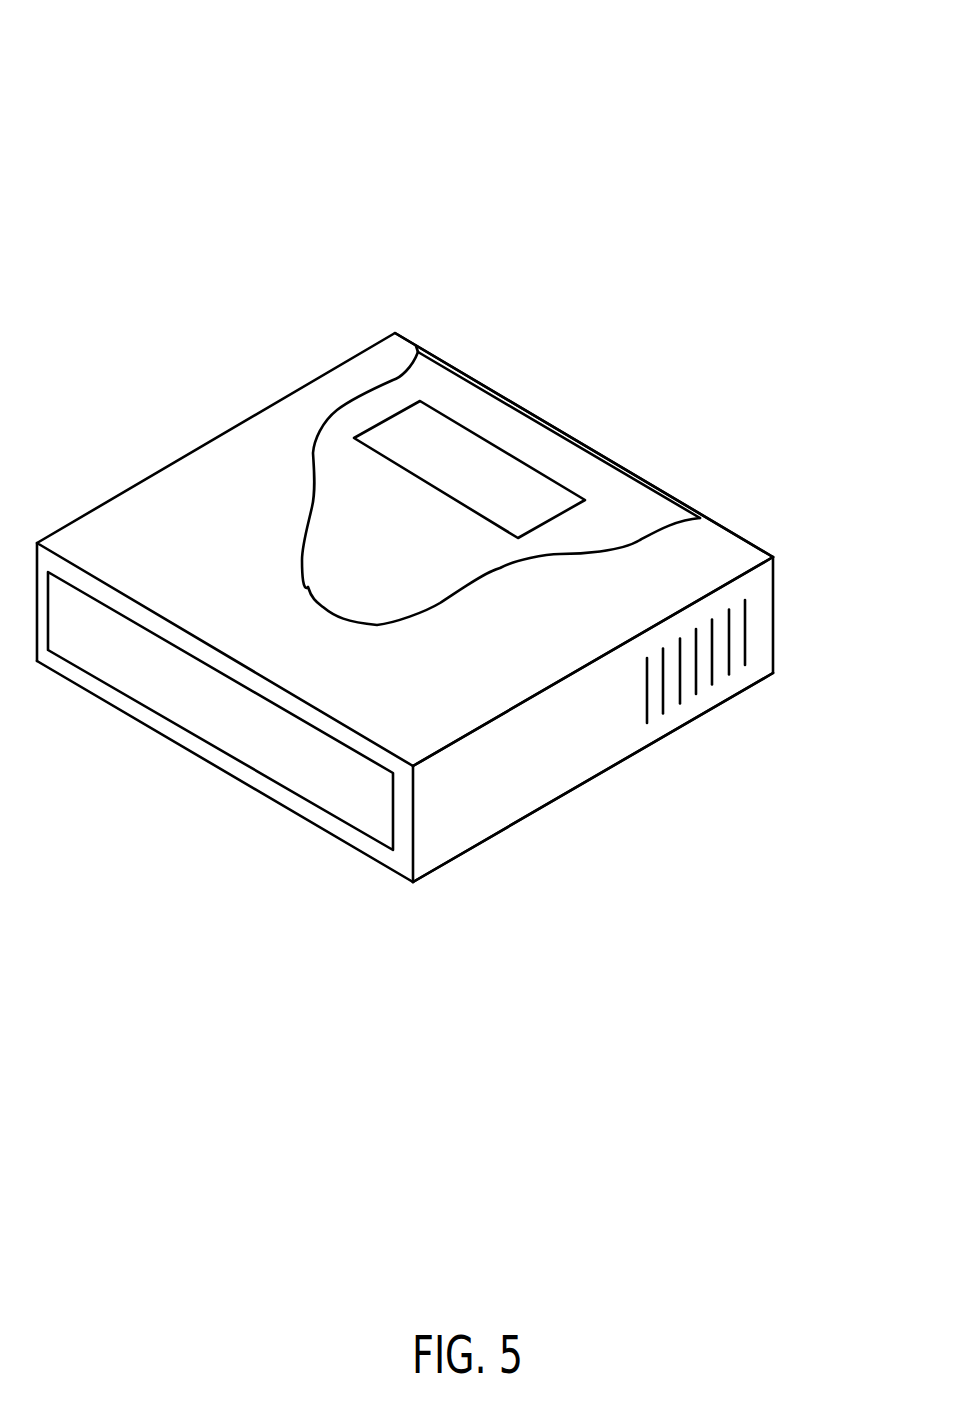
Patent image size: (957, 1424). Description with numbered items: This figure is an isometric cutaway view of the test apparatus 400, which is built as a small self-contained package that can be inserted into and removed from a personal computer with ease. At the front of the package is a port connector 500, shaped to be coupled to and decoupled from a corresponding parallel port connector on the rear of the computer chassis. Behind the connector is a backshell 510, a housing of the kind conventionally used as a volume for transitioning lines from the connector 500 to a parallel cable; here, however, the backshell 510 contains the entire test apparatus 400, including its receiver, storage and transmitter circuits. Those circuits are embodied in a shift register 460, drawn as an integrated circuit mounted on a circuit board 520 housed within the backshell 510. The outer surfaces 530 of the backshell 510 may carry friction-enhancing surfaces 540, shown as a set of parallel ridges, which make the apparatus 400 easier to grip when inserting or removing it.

The test apparatus 400 is at (422, 471).
The shift register 460 is at (482, 475).
The port connector 500 is at (377, 817).
The backshell 510 is at (370, 365).
The circuit board 520 is at (413, 387).
The surfaces 530 is at (510, 797).
The friction-enhancing surfaces 540 is at (680, 696).